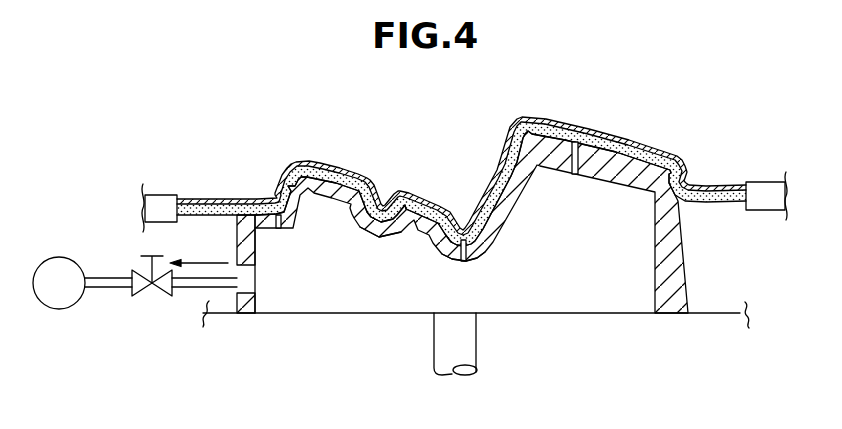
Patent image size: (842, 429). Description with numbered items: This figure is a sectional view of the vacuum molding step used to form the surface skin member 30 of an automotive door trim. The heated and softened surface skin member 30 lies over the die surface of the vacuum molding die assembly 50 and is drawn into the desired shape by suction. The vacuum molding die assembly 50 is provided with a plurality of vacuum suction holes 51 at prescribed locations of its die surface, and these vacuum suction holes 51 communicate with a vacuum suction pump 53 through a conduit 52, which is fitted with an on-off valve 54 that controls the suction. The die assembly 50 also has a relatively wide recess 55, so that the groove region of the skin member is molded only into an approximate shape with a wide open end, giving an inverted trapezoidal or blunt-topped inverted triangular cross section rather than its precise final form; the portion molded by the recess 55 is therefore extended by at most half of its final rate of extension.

The surface skin member 30 is at (540, 120).
The vacuum molding die assembly 50 is at (677, 264).
The vacuum suction holes 51 is at (288, 229).
The conduit 52 is at (190, 290).
The vacuum suction pump 53 is at (58, 257).
The on-off valve 54 is at (145, 292).
The recess 55 is at (387, 240).